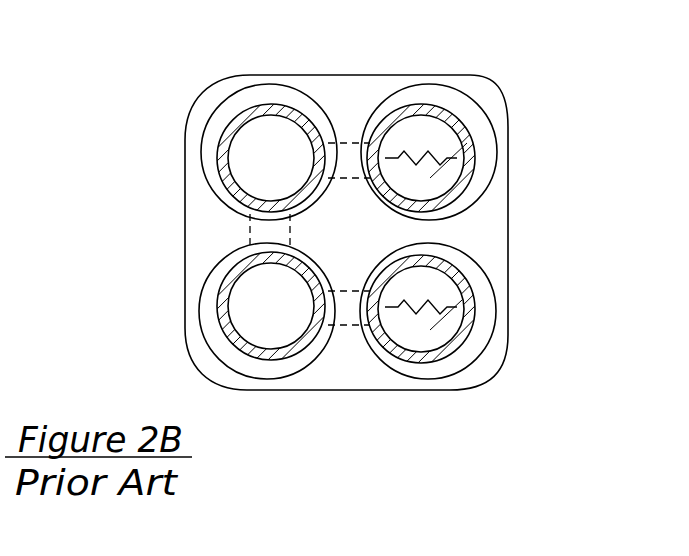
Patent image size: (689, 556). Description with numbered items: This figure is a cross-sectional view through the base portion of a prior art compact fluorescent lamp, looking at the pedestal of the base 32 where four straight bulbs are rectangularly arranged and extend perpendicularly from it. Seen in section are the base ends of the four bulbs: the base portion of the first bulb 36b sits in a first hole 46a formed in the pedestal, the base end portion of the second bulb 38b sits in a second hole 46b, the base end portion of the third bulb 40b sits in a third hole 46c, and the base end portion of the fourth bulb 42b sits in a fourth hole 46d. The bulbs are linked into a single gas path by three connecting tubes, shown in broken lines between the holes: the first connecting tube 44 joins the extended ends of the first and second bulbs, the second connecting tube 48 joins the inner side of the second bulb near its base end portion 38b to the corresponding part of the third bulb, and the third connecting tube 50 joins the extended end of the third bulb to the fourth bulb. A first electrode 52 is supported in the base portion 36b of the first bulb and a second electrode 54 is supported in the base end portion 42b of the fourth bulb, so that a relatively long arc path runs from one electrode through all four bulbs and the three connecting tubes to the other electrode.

The base 32 is at (12, 0).
The base portion of the first bulb 36b is at (449, 114).
The base end portion of the second bulb 38b is at (222, 161).
The base end portion of the third bulb 40b is at (280, 358).
The base end portion of the fourth bulb 42b is at (432, 350).
The first connecting tube 44 is at (349, 172).
The first hole 46a is at (421, 90).
The second hole 46b is at (230, 90).
The third hole 46c is at (204, 330).
The fourth hole 46d is at (412, 368).
The second connecting tube 48 is at (273, 230).
The third connecting tube 50 is at (340, 294).
The first electrode 52 is at (425, 160).
The second electrode 54 is at (432, 333).